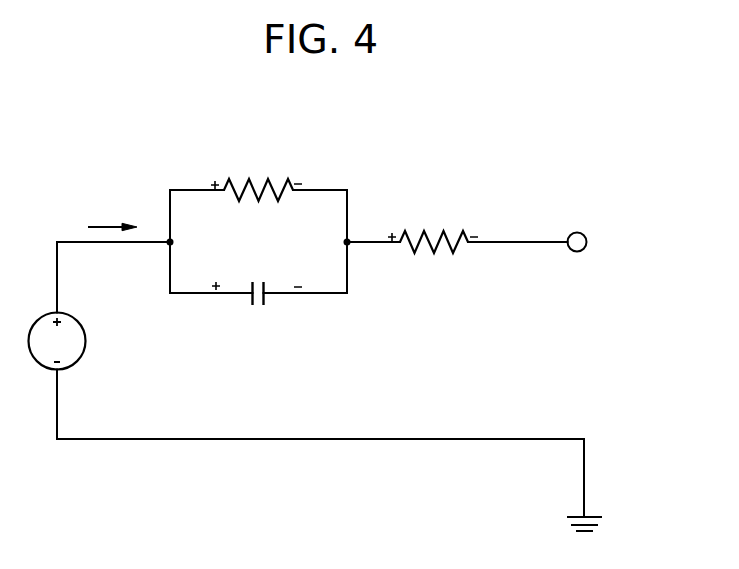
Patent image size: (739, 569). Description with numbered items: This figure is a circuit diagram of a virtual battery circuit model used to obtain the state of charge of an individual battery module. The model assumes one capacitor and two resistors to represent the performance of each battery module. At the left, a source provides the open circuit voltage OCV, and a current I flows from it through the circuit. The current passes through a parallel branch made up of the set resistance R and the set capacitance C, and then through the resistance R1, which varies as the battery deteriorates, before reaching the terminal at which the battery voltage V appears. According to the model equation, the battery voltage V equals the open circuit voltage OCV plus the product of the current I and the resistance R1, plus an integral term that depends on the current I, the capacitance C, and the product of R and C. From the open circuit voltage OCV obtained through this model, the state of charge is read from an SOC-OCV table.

The open circuit voltage OCV is at (87, 341).
The current I is at (112, 217).
The set resistance R is at (256, 176).
The set capacitance C is at (257, 310).
The resistance that varies as the battery deteriorates R1 is at (440, 215).
The battery voltage V is at (591, 242).